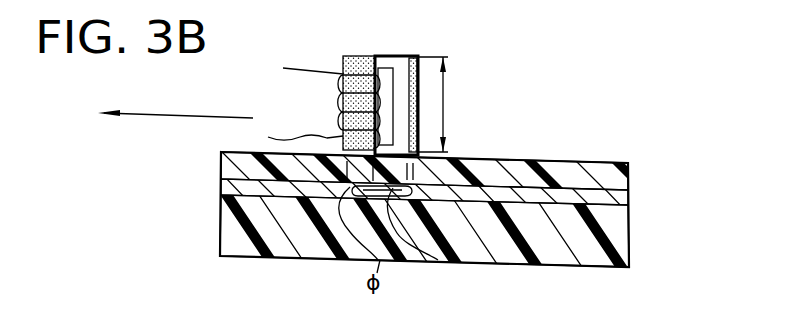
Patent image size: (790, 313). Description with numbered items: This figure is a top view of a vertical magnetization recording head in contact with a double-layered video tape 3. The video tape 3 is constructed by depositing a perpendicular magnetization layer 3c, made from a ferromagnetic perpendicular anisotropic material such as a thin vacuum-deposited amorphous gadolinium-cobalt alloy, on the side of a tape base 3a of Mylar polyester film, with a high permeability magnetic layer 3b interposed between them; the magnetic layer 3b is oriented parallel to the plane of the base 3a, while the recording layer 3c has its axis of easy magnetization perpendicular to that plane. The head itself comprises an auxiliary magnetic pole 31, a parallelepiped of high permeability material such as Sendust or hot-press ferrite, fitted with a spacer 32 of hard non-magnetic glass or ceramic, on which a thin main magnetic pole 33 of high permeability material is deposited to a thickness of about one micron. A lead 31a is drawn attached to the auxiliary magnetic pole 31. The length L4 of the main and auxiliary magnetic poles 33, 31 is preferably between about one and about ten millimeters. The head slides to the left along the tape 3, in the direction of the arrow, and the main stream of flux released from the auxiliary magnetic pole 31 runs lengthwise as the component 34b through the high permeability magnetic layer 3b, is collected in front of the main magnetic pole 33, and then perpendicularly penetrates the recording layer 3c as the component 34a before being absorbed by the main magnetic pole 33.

The video tape 3 is at (468, 210).
The tape base 3a is at (455, 231).
The high permeability magnetic layer 3b is at (626, 202).
The perpendicular magnetization layer 3c is at (627, 184).
The auxiliary magnetic pole 31 is at (348, 57).
The coil lead 31a is at (283, 68).
The spacer 32 is at (385, 57).
The main magnetic pole 33 is at (412, 57).
The magnetic flux component perpendicularly penetrating the recording layer 34a is at (443, 158).
The magnetic flux component running lengthwise through the high permeability magneti 34b is at (440, 260).
The length of the main and auxiliary magnetic poles L4 is at (447, 94).